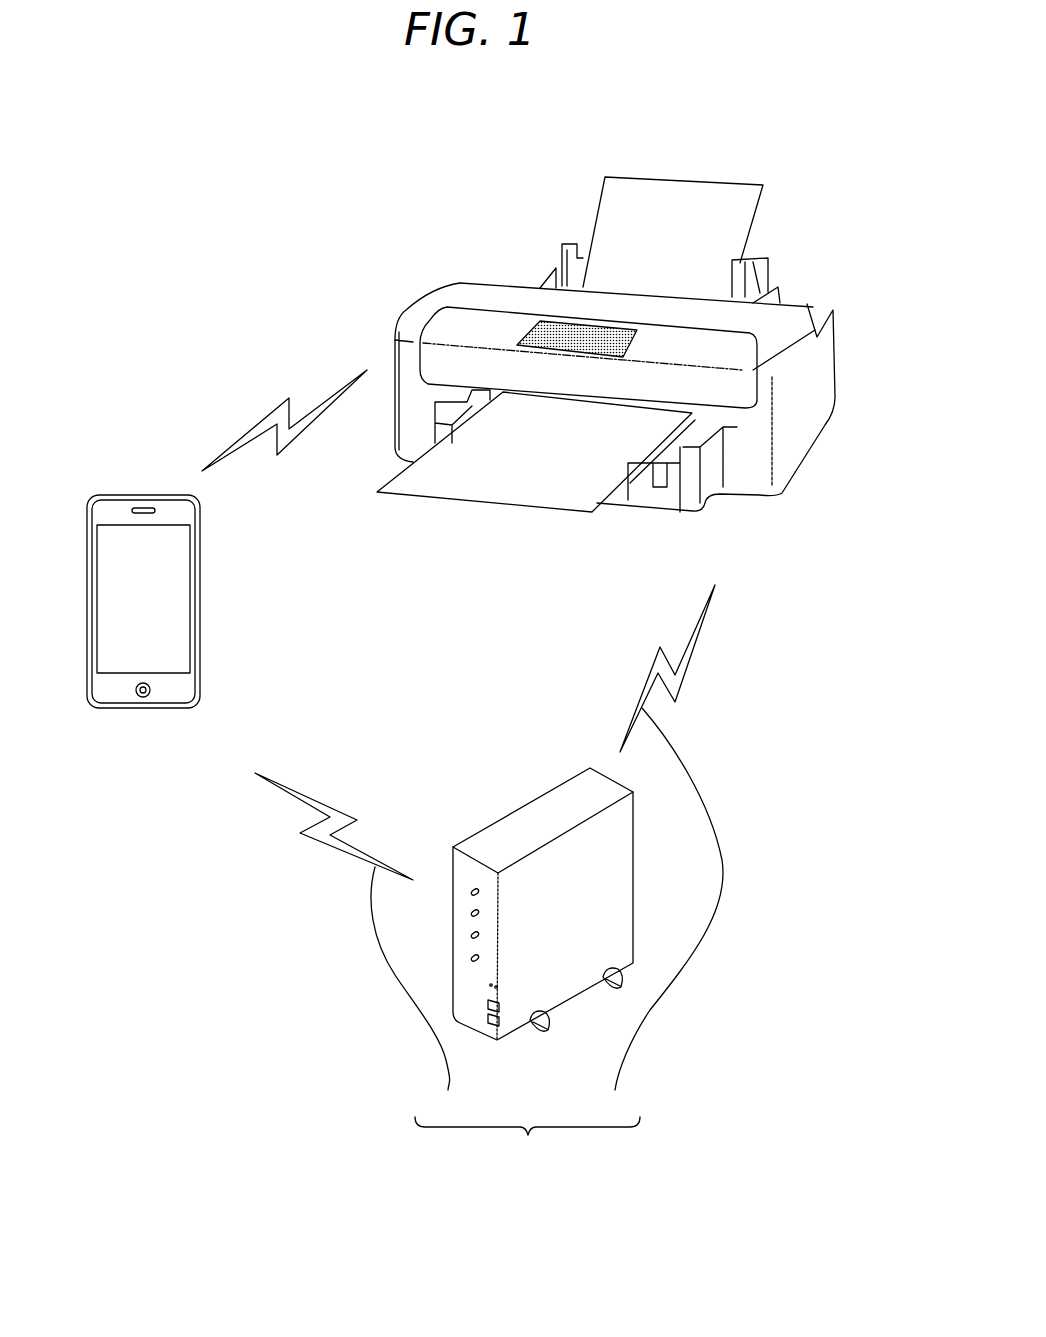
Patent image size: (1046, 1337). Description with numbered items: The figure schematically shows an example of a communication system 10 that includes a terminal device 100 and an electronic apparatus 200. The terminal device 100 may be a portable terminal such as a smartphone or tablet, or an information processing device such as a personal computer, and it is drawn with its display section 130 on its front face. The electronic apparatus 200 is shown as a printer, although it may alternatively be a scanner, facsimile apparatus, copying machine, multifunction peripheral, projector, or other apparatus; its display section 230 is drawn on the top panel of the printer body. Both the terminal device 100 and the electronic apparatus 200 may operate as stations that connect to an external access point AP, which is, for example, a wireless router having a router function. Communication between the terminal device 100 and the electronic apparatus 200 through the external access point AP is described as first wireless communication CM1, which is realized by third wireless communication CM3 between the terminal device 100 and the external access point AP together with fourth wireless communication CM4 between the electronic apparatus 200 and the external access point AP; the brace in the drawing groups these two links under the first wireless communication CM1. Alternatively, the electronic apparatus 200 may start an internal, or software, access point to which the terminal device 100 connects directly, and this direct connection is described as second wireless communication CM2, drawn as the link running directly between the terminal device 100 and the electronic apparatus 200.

The communication system 10 is at (492, 146).
The electronic apparatus 200 is at (656, 541).
The display section 230 is at (534, 323).
The terminal device 100 is at (183, 692).
The display section 130 is at (177, 578).
The external access point AP is at (535, 815).
The first wireless communication CM1 is at (527, 1140).
The second wireless communication CM2 is at (263, 415).
The third wireless communication CM3 is at (359, 945).
The fourth wireless communication CM4 is at (656, 851).